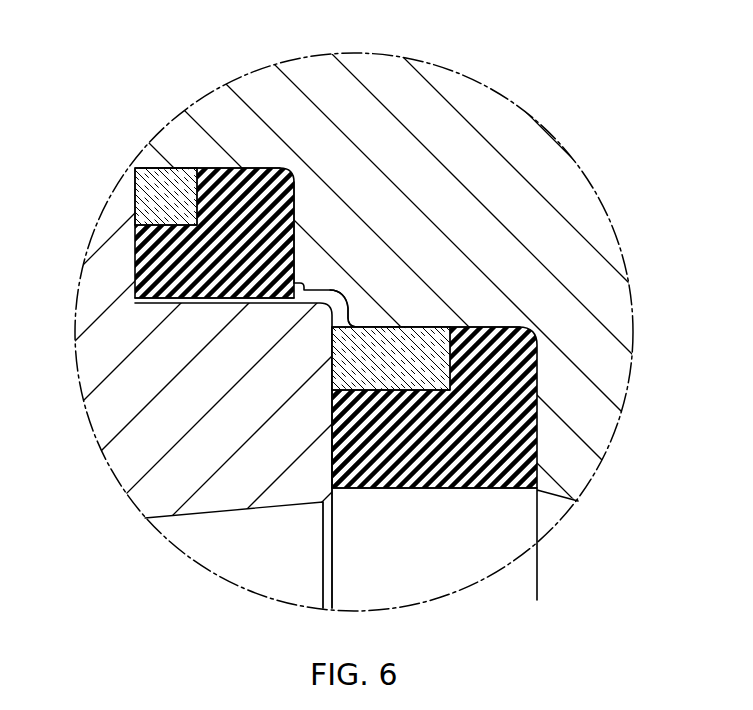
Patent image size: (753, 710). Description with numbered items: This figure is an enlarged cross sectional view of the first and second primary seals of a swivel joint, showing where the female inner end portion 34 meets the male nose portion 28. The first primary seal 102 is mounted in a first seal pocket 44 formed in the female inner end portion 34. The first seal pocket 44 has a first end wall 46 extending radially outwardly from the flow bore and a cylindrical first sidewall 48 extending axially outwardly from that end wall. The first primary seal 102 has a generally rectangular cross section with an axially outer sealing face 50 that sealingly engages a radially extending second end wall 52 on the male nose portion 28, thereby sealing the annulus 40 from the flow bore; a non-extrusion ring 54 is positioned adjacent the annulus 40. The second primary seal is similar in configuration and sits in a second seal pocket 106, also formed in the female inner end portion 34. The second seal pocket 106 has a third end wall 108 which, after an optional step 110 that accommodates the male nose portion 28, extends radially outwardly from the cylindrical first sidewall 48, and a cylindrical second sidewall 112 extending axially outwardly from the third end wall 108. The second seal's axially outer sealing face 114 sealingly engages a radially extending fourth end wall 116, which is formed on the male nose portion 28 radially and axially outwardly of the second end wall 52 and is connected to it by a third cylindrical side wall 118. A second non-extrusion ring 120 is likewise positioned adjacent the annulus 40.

The male nose portion 28 is at (128, 478).
The female inner end portion 34 is at (562, 156).
The annulus 40 is at (134, 172).
The first seal pocket 44 is at (510, 310).
The first end wall 46 is at (540, 395).
The cylindrical first sidewall 48 is at (485, 330).
The axially outer sealing face 50 is at (330, 476).
The second end wall 52 is at (373, 488).
The non-extrusion ring 54 is at (378, 326).
The first primary seal 102 is at (478, 497).
The second seal pocket 106 is at (292, 165).
The third end wall 108 is at (298, 220).
The step 110 is at (335, 289).
The cylindrical second sidewall 112 is at (243, 167).
The axially outer sealing face 114 is at (134, 280).
The fourth end wall 116 is at (134, 238).
The third cylindrical side wall 118 is at (258, 300).
The non-extrusion ring 120 is at (148, 166).